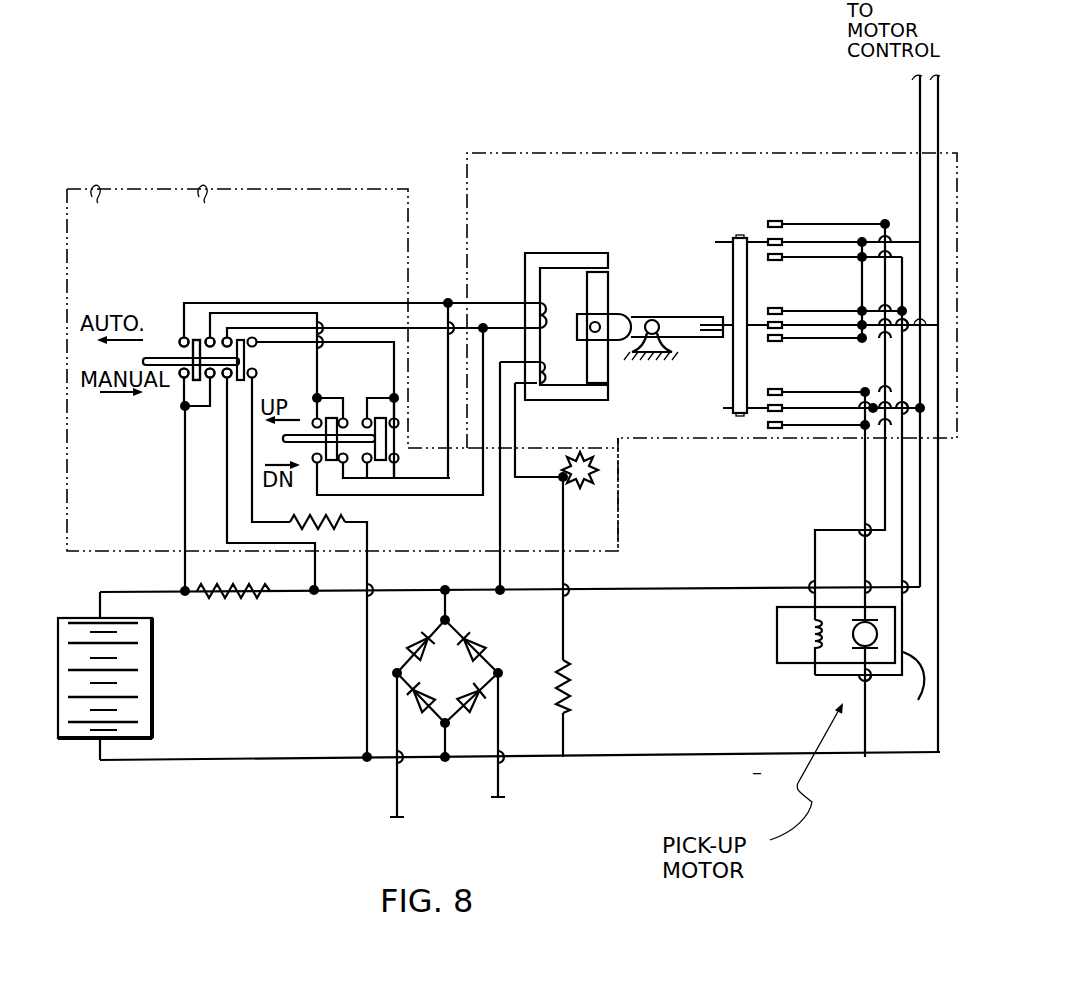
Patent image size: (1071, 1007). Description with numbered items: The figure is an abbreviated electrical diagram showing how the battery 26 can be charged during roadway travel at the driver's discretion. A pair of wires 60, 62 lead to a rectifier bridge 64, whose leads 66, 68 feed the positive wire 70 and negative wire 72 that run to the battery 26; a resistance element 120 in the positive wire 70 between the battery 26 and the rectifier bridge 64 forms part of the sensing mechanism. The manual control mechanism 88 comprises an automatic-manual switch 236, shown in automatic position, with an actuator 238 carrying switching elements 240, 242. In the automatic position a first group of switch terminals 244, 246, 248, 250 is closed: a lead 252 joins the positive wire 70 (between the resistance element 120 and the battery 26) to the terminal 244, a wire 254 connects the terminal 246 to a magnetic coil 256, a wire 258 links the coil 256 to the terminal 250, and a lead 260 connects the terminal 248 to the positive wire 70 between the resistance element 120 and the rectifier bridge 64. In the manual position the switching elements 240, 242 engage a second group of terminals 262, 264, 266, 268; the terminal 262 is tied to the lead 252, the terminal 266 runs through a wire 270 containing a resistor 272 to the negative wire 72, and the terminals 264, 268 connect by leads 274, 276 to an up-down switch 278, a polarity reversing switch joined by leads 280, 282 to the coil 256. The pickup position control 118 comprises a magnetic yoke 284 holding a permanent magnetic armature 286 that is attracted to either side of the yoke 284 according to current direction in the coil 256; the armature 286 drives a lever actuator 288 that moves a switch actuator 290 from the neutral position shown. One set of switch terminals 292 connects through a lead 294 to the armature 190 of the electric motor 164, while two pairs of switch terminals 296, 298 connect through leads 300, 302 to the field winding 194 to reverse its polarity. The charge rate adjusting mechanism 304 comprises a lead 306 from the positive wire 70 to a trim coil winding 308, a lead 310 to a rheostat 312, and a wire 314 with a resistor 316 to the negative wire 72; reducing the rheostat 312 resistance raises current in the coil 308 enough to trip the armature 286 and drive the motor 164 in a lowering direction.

The battery 26 is at (80, 615).
The wire 60 is at (500, 790).
The wire 62 is at (392, 782).
The rectifier bridge 64 is at (491, 636).
The lead 66 is at (446, 615).
The lead 68 is at (448, 738).
The positive wire 70 is at (634, 591).
The negative wire 72 is at (282, 762).
The manual control mechanism 88 is at (184, 185).
The pickup position control 118 is at (610, 148).
The resistance element 120 is at (264, 594).
The electric motor 164 is at (774, 652).
The armature 190 is at (850, 640).
The field winding 194 is at (808, 655).
The automatic-manual switch 236 is at (160, 319).
The actuator 238 is at (148, 354).
The switching element 240 is at (197, 338).
The switching element 242 is at (244, 338).
The switch terminal 244 is at (180, 377).
The switch terminal 246 is at (177, 343).
The switch terminal 248 is at (228, 380).
The switch terminal 250 is at (230, 338).
The lead 252 is at (184, 520).
The wire 254 is at (340, 303).
The magnetic coil 256 is at (540, 308).
The wire 258 is at (397, 330).
The lead 260 is at (231, 506).
The switch terminal 262 is at (212, 380).
The switch terminal 264 is at (206, 338).
The switch terminal 266 is at (256, 377).
The switch terminal 268 is at (253, 338).
The wire 270 is at (256, 507).
The resistor 272 is at (360, 510).
The lead 274 is at (273, 313).
The lead 276 is at (257, 346).
The up-down switch 278 is at (336, 385).
The lead 280 is at (428, 496).
The lead 282 is at (398, 480).
The magnetic yoke 284 is at (550, 253).
The permanent magnetic armature 286 is at (607, 300).
The lever actuator 288 is at (670, 317).
The switch actuator 290 is at (729, 382).
The switch terminals 292 is at (775, 396).
The lead 294 is at (864, 510).
The switch terminals 296 is at (775, 312).
The switch terminals 298 is at (775, 260).
The lead 300 is at (813, 552).
The lead 302 is at (899, 684).
The charge rate adjusting mechanism 304 is at (596, 496).
The lead 306 is at (502, 531).
The trim coil winding 308 is at (563, 375).
The lead 310 is at (558, 480).
The rheostat 312 is at (632, 430).
The wire 314 is at (565, 578).
The resistor 316 is at (573, 693).